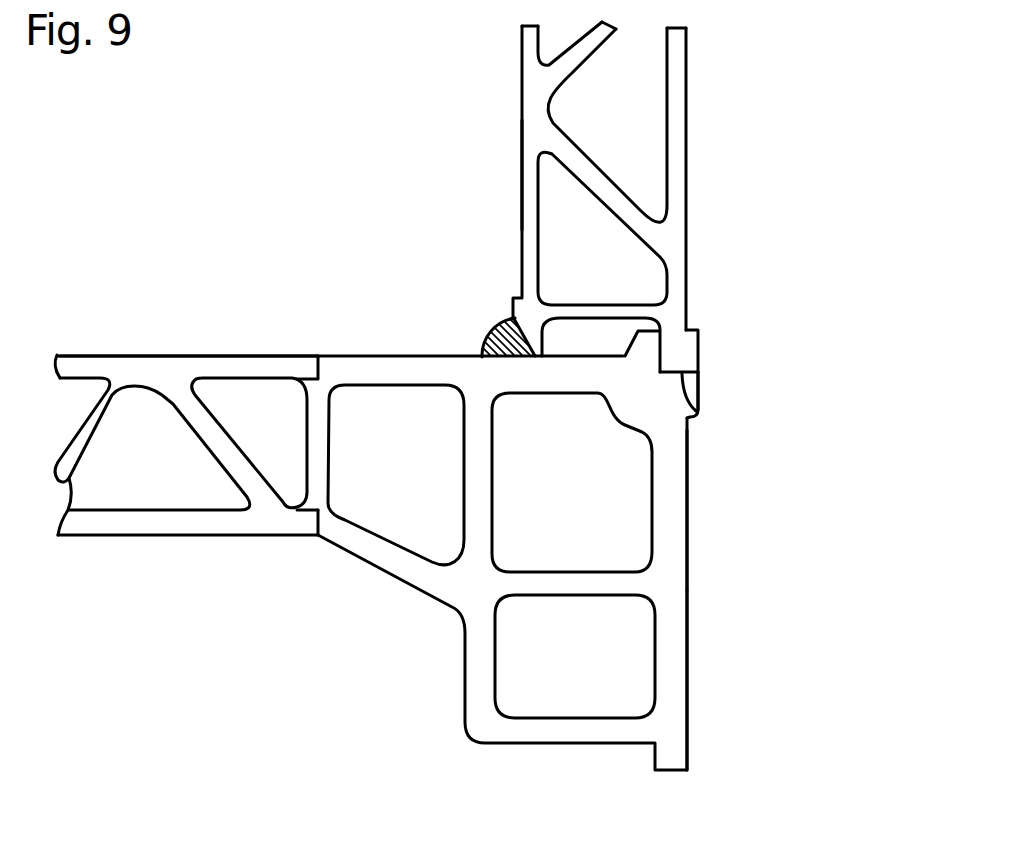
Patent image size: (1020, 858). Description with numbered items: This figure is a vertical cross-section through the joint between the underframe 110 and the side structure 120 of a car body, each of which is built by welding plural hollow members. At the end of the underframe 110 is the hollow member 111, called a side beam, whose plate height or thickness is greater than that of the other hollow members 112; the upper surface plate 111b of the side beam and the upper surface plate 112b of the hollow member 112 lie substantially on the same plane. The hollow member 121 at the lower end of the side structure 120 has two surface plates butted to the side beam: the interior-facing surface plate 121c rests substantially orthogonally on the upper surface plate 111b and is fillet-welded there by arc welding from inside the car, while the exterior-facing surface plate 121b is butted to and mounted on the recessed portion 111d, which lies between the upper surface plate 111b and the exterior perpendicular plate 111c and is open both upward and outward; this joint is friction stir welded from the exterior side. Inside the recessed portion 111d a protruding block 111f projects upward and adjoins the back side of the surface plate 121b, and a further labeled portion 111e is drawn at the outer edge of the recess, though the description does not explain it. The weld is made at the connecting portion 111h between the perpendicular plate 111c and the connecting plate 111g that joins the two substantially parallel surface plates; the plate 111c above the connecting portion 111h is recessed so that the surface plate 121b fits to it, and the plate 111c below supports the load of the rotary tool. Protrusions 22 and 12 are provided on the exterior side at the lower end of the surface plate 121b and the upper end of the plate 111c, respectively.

The underframe 110 is at (427, 539).
The hollow member 111 is at (428, 522).
The upper surface plate 111b is at (393, 363).
The perpendicular plate 111c is at (668, 537).
The recessed portion 111d is at (658, 358).
The engaging lip 111e is at (692, 418).
The protruding block 111f is at (647, 340).
The connecting plate 111g is at (575, 654).
The connecting portion 111h is at (678, 583).
The hollow member 112 is at (186, 467).
The upper surface plate 112b is at (189, 318).
The side structure 120 is at (642, 220).
The hollow member 121 is at (599, 220).
The surface plate 121b is at (757, 282).
The surface plate 121c is at (522, 197).
The protrusion 22 is at (739, 371).
The protrusion 12 is at (743, 389).